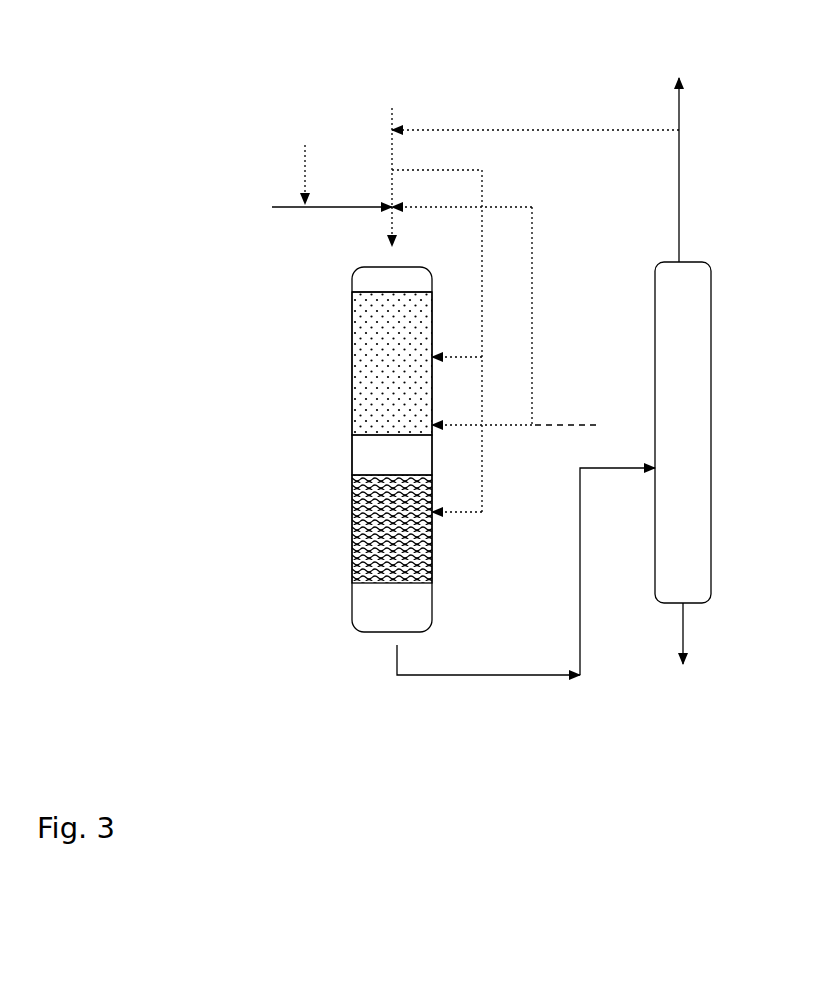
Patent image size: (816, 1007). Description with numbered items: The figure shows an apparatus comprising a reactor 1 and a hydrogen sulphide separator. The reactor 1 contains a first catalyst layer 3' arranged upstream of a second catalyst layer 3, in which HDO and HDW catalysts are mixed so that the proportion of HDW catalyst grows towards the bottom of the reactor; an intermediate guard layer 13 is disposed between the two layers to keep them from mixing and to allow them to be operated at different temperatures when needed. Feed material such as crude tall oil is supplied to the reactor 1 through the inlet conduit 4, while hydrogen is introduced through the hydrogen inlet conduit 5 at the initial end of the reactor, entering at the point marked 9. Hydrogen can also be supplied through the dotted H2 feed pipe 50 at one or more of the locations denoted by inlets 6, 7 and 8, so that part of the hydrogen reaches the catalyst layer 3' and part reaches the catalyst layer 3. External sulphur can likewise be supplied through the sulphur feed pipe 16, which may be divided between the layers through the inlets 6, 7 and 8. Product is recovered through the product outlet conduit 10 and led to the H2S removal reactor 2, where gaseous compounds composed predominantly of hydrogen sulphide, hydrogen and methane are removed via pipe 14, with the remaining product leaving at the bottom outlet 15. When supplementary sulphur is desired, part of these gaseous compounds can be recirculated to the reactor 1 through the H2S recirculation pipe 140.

The reactor 1 is at (352, 622).
The H2S removal reactor 2 is at (700, 410).
The second catalyst layer 3 is at (341, 529).
The first catalyst layer 3' is at (341, 363).
The inlet conduit 4 is at (298, 202).
The hydrogen inlet conduit 5 is at (392, 131).
The inlet 6 is at (457, 340).
The inlet 7 is at (462, 316).
The inlet 8 is at (457, 496).
The reactor inlet 9 is at (403, 232).
The product outlet conduit 10 is at (526, 571).
The intermediate guard layer 13 is at (352, 453).
The pipe 14 is at (703, 170).
The liquid outlet line 15 is at (683, 661).
The sulphur feed pipe 16 is at (441, 272).
The H2 feed pipe 50 is at (437, 321).
The H2S recirculation pipe 140 is at (535, 118).